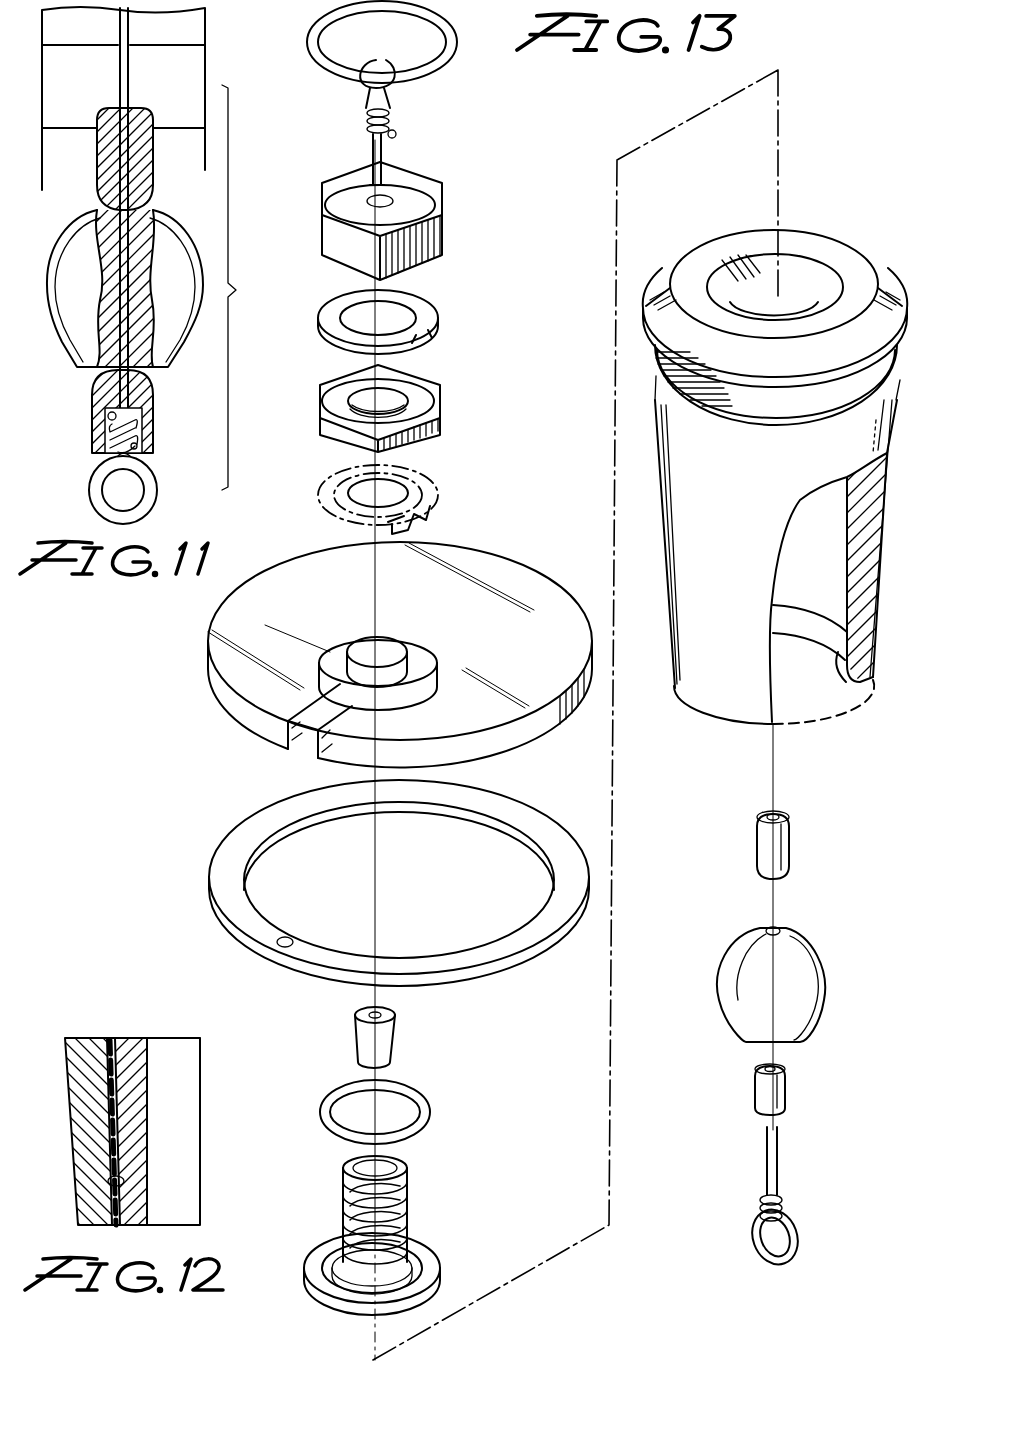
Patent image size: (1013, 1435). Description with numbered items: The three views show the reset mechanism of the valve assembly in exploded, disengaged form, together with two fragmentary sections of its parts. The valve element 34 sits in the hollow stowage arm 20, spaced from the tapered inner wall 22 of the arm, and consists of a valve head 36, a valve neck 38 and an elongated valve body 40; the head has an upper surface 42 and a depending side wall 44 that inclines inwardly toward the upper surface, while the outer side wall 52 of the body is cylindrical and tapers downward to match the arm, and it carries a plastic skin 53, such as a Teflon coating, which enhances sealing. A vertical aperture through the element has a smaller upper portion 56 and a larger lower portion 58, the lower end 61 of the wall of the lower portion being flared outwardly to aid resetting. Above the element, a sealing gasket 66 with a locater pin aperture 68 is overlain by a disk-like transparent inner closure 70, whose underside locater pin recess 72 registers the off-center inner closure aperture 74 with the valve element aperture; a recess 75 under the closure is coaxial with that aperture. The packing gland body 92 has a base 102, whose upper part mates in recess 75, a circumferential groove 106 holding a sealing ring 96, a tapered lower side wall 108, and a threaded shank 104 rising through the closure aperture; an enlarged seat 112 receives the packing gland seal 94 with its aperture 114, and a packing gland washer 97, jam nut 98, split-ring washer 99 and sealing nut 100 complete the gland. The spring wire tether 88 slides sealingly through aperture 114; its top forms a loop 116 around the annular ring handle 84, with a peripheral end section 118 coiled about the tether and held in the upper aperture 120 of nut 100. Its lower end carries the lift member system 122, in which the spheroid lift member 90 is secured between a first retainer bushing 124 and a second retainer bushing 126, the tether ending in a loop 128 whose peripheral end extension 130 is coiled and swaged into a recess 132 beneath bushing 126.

In FIG. 12, the stowage arm 20 is at (63, 1076).
In FIG. 12, the inner wall of the stowage arm 22 is at (110, 1178).
In FIG. 13, the valve element 34 is at (742, 487).
In FIG. 13, the valve head 36 is at (902, 283).
In FIG. 13, the valve neck 38 is at (767, 400).
In FIG. 12, the elongated valve body 40 is at (130, 1040).
In FIG. 13, the elongated valve body 40 is at (655, 458).
In FIG. 13, the upper surface of the valve head 42 is at (725, 250).
In FIG. 13, the depending side wall of the valve head 44 is at (658, 285).
In FIG. 12, the outer side wall of the valve body 52 is at (120, 1128).
In FIG. 13, the outer side wall of the valve body 52 is at (862, 536).
In FIG. 12, the plastic skin 53 is at (112, 1096).
In FIG. 13, the plastic skin 53 is at (882, 598).
In FIG. 13, the upper portion of the valve element aperture 56 is at (787, 297).
In FIG. 13, the lower portion of the valve element aperture 58 is at (820, 588).
In FIG. 13, the lower end of the side wall defining the lower aperture 61 is at (842, 654).
In FIG. 13, the sealing gasket 66 is at (208, 909).
In FIG. 13, the locater pin aperture 68 is at (289, 938).
In FIG. 13, the inner closure 70 is at (208, 686).
In FIG. 13, the locater pin recess 72 is at (293, 745).
In FIG. 13, the inner closure aperture 74 is at (366, 650).
In FIG. 13, the recess in the underside of the inner closure 75 is at (434, 667).
In FIG. 13, the handle 84 is at (447, 68).
In FIG. 13, the tether 88 is at (385, 153).
In FIG. 11, the lift member 90 is at (78, 366).
In FIG. 13, the lift member 90 is at (745, 1019).
In FIG. 13, the packing gland body 92 is at (379, 1253).
In FIG. 13, the packing gland seal 94 is at (396, 1028).
In FIG. 13, the sealing ring 96 is at (432, 1113).
In FIG. 13, the packing gland washer 97 is at (440, 497).
In FIG. 13, the packing gland jam nut 98 is at (442, 411).
In FIG. 13, the split-ring washer 99 is at (440, 319).
In FIG. 13, the packing gland sealing nut 100 is at (444, 231).
In FIG. 13, the base of the packing gland body 102 is at (326, 1298).
In FIG. 13, the threaded shank 104 is at (352, 1206).
In FIG. 13, the circumferential groove 106 is at (418, 1262).
In FIG. 13, the side wall of the packing gland base 108 is at (356, 1318).
In FIG. 13, the seat for the packing gland seal 112 is at (362, 1173).
In FIG. 13, the aperture of the packing gland seal 114 is at (368, 1015).
In FIG. 13, the loop 116 is at (396, 40).
In FIG. 13, the peripheral end section 118 is at (366, 124).
In FIG. 13, the upper aperture in the packing gland nut 120 is at (392, 199).
In FIG. 11, the lift member system 122 is at (253, 287).
In FIG. 11, the first retainer bushing 124 is at (152, 162).
In FIG. 13, the first retainer bushing 124 is at (790, 853).
In FIG. 11, the second retainer bushing 126 is at (153, 422).
In FIG. 13, the second retainer bushing 126 is at (787, 1093).
In FIG. 11, the loop 128 is at (90, 491).
In FIG. 13, the loop 128 is at (760, 1259).
In FIG. 11, the peripheral end extension 130 is at (108, 435).
In FIG. 13, the peripheral end extension 130 is at (783, 1206).
In FIG. 11, the recess in the underside of the second retainer bushing 132 is at (142, 437).